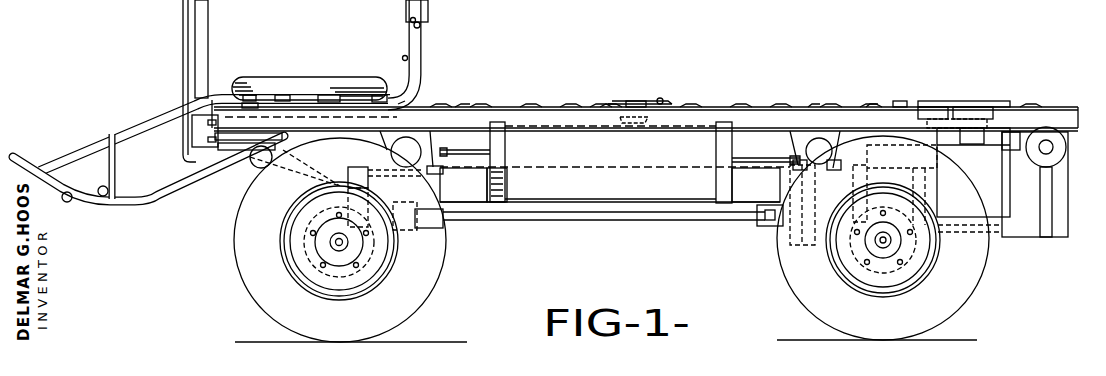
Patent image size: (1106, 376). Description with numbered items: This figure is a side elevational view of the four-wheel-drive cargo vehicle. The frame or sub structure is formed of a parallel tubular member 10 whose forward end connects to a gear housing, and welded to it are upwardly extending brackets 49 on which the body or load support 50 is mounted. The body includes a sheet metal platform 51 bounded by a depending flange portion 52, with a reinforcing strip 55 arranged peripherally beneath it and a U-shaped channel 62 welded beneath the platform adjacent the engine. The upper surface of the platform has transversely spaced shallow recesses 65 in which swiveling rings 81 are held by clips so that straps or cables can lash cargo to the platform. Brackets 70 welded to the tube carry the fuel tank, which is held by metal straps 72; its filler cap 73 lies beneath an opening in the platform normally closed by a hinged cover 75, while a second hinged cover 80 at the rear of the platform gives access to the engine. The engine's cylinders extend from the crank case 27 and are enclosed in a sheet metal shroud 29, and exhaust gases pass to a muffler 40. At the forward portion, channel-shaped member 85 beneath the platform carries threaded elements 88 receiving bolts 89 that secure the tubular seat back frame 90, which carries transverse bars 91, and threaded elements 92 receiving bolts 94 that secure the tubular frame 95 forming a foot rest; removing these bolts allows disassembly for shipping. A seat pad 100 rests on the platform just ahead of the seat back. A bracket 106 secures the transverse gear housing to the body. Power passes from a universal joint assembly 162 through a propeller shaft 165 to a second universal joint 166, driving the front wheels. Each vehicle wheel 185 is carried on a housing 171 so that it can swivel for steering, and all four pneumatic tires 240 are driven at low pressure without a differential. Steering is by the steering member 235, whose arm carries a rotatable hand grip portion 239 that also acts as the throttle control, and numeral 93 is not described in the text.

The tubular frame member 10 is at (472, 214).
The crank case 27 is at (990, 176).
The sheet metal shroud 29 is at (1030, 237).
The muffler 40 is at (1040, 161).
The upwardly extending brackets 49 is at (795, 145).
The body or load support 50 is at (717, 97).
The sheet metal platform 51 is at (872, 104).
The flange portion 52 is at (463, 118).
The reinforcing strip 55 is at (613, 53).
The U-shaped channel 62 is at (815, 107).
The shallow recesses 65 is at (551, 85).
The brackets 70 is at (506, 168).
The metal straps 72 is at (506, 148).
The filler cap 73 is at (635, 100).
The cover 75 is at (640, 97).
The hinged cover 80 is at (987, 103).
The rings 81 is at (898, 104).
The channel-shaped member 85 is at (405, 100).
The threaded elements 88 is at (348, 96).
The bolts 89 is at (379, 96).
The tubular seat back frame 90 is at (417, 43).
The transverse bars 91 is at (410, 18).
The threaded elements 92 is at (285, 106).
The pin 93 is at (406, 24).
The bolts 94 is at (288, 99).
The tubular frame 95 is at (162, 189).
The seat pad 100 is at (353, 85).
The bracket 106 is at (247, 183).
The universal joint assembly 162 is at (775, 218).
The propeller shaft 165 is at (650, 211).
The second universal joint 166 is at (392, 243).
The housing 171 is at (390, 262).
The vehicle wheel 185 is at (370, 287).
The steering member 235 is at (204, 33).
The hand grip portion 239 is at (210, 3).
The tires 240 is at (247, 290).